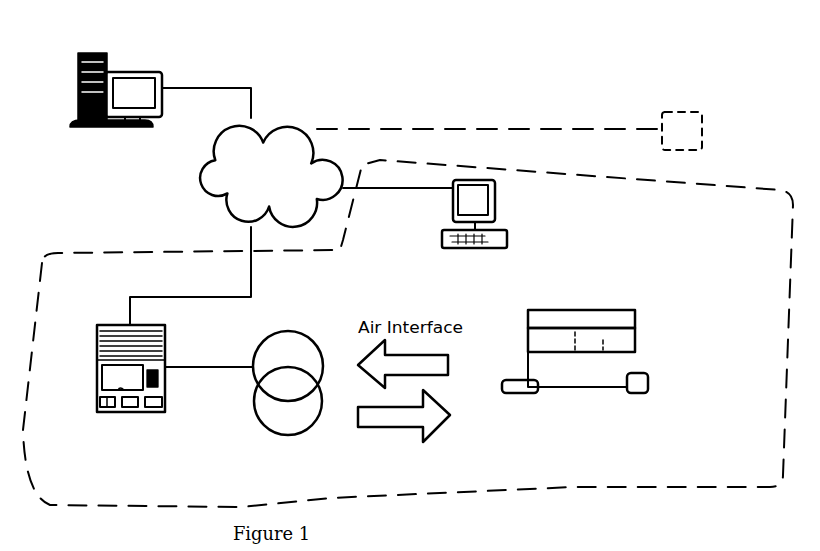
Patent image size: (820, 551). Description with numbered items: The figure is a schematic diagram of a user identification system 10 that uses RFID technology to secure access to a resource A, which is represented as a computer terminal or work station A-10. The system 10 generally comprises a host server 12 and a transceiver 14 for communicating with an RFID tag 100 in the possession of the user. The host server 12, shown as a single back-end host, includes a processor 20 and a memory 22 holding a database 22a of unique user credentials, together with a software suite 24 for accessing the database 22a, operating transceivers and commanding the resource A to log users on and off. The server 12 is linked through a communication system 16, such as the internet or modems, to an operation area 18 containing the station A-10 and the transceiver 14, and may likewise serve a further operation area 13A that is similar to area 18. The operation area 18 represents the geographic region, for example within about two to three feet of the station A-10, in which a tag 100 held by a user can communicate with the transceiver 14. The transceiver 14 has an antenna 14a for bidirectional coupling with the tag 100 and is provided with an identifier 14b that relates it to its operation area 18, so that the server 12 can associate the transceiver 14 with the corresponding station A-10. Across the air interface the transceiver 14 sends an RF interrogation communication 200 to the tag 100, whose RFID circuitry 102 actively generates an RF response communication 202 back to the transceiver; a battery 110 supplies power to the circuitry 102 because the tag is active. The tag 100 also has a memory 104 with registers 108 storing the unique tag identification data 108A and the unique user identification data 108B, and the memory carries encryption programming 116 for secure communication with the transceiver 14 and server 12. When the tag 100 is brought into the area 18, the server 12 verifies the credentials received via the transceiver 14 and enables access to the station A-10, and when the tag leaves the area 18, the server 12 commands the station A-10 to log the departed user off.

The user identification system 10 is at (483, 88).
The host server 12 is at (119, 87).
The remote terminal 13A is at (692, 122).
The transceiver 14 is at (131, 376).
The antenna 14a is at (275, 332).
The transceiver identifier 14b is at (152, 330).
The communication system 16 is at (313, 128).
The operation area 18 is at (730, 493).
The processor 20 is at (135, 68).
The memory 22 is at (117, 70).
The database 22a is at (80, 93).
The software suite 24 is at (78, 68).
The resource A is at (495, 203).
The work station A-10 is at (507, 237).
The RFID tag 100 is at (626, 342).
The RFID circuitry 102 is at (507, 382).
The memory 104 is at (563, 310).
The registers 108 is at (608, 342).
The unique tag identification data 108A is at (550, 342).
The unique user identification data 108B is at (603, 340).
The battery 110 is at (665, 383).
The tag substrate 116 is at (623, 318).
The RF interrogation communication 200 is at (392, 425).
The RF response communication 202 is at (387, 365).